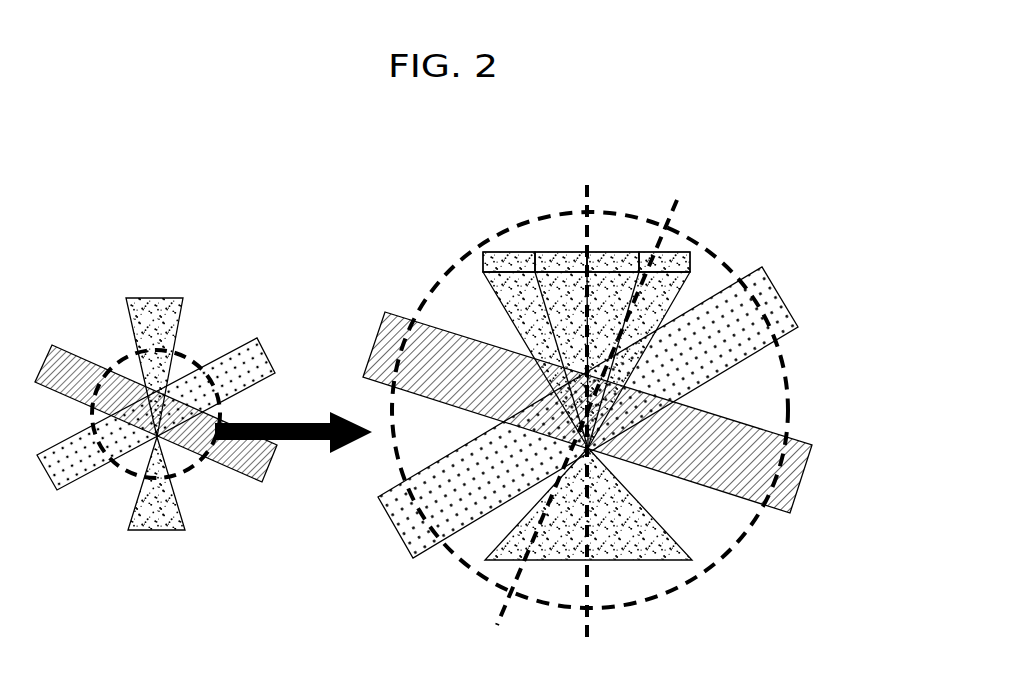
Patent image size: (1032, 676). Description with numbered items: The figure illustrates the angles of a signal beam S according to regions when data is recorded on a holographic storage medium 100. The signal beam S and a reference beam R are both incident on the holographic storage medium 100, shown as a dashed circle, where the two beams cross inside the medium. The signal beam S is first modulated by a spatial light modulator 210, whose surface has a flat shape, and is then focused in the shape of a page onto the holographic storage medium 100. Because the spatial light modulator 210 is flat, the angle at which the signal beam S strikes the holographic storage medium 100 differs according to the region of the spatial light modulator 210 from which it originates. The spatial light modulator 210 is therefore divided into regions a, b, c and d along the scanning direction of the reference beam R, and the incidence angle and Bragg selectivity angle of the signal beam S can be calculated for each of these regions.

The holographic storage medium 100 is at (80, 356).
The spatial light modulator (SLM) 210 is at (483, 262).
The signal beam S is at (732, 217).
The reference beam R is at (358, 552).
The a region a is at (509, 249).
The b region b is at (561, 249).
The c region c is at (613, 249).
The d region d is at (664, 249).